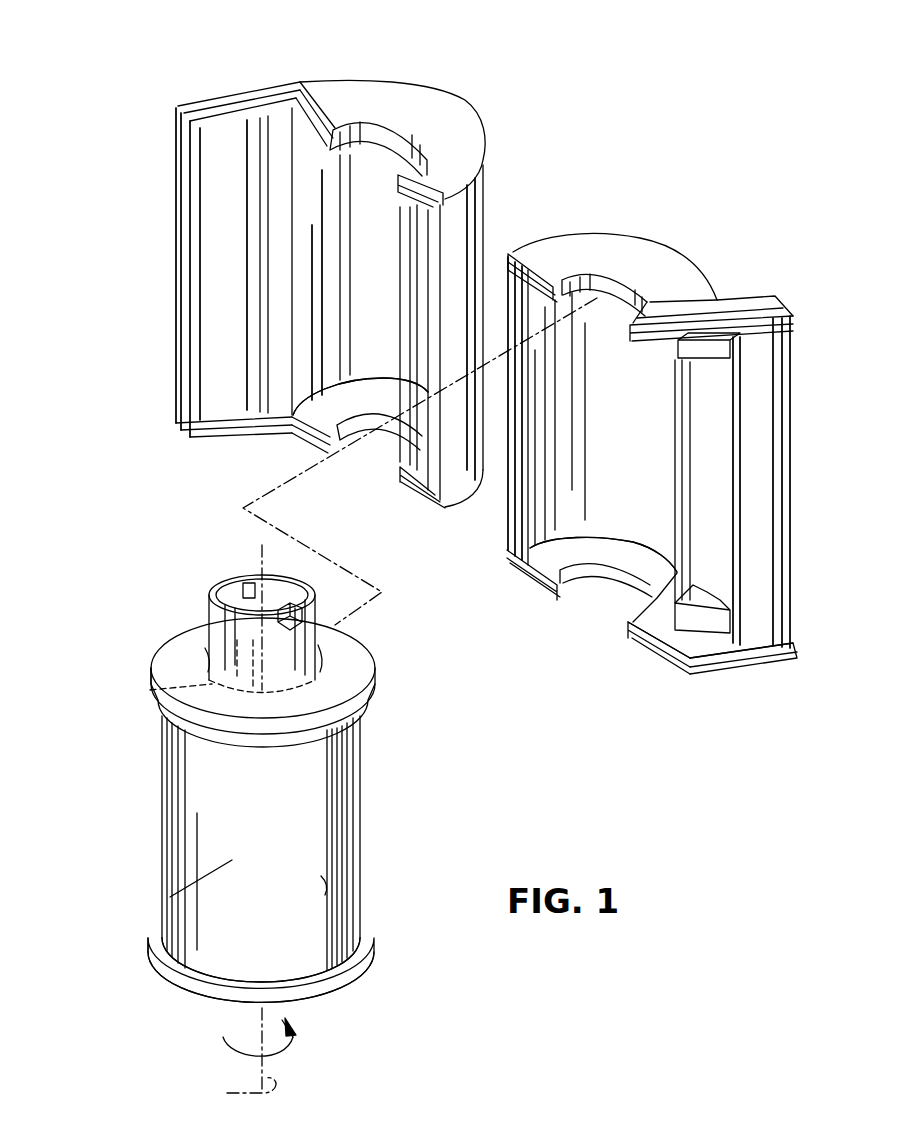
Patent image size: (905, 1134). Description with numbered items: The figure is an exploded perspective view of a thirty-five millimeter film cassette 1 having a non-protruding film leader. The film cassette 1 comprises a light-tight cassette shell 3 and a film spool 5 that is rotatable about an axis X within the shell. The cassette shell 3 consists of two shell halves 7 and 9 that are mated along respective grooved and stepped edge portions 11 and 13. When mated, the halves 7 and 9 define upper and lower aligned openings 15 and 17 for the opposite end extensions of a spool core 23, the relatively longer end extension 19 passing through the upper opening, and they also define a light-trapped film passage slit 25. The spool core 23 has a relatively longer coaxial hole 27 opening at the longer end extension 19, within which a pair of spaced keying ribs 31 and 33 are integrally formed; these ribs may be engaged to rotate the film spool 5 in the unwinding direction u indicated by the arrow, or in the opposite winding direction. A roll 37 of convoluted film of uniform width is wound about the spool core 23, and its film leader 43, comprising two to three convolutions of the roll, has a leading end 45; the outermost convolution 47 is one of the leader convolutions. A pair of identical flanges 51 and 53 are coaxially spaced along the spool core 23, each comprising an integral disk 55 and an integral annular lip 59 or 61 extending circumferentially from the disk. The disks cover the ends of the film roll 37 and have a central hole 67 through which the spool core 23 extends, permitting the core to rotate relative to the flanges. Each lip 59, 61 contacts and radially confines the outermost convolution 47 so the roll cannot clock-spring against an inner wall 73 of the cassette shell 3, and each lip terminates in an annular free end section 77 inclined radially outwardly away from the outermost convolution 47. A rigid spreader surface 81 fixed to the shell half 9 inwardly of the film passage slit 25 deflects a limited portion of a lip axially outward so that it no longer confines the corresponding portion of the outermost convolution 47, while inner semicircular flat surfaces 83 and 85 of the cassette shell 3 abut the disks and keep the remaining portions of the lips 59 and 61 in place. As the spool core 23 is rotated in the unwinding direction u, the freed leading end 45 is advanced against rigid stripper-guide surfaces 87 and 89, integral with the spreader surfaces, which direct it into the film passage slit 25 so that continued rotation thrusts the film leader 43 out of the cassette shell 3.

The film cassette 1 is at (275, 65).
The cassette shell 3 is at (573, 236).
The film spool 5 is at (372, 820).
The shell half 7 is at (412, 90).
The shell half 9 is at (662, 236).
The grooved edge portion 11 is at (195, 140).
The stepped edge portion 13 is at (508, 257).
The upper aligned opening 15 is at (392, 150).
The lower aligned opening 17 is at (628, 288).
The longer end extension 19 is at (205, 606).
The spool core 23 is at (325, 652).
The film passage slit 25 is at (208, 303).
The longer coaxial hole 27 is at (248, 583).
The keying rib 31 is at (276, 604).
The keying rib 33 is at (150, 690).
The film roll 37 is at (165, 790).
The film leader 43 is at (305, 900).
The leading end 45 is at (321, 876).
The outermost convolution 47 is at (180, 885).
The flange 51 is at (382, 700).
The flange 53 is at (174, 968).
The disk 55 is at (178, 662).
The annular lip 59 is at (335, 710).
The annular lip 61 is at (205, 998).
The central hole 67 is at (205, 653).
The inner wall 73 is at (390, 285).
The annular free end section 77 is at (168, 702).
The spreader surface 81 is at (695, 645).
The inner semicircular flat surface 83 is at (405, 162).
The inner semicircular flat surface 85 is at (372, 398).
The stripper-guide surface 87 is at (705, 356).
The stripper-guide surface 89 is at (705, 615).
The unwinding direction u is at (298, 1042).
The axis X is at (225, 1093).